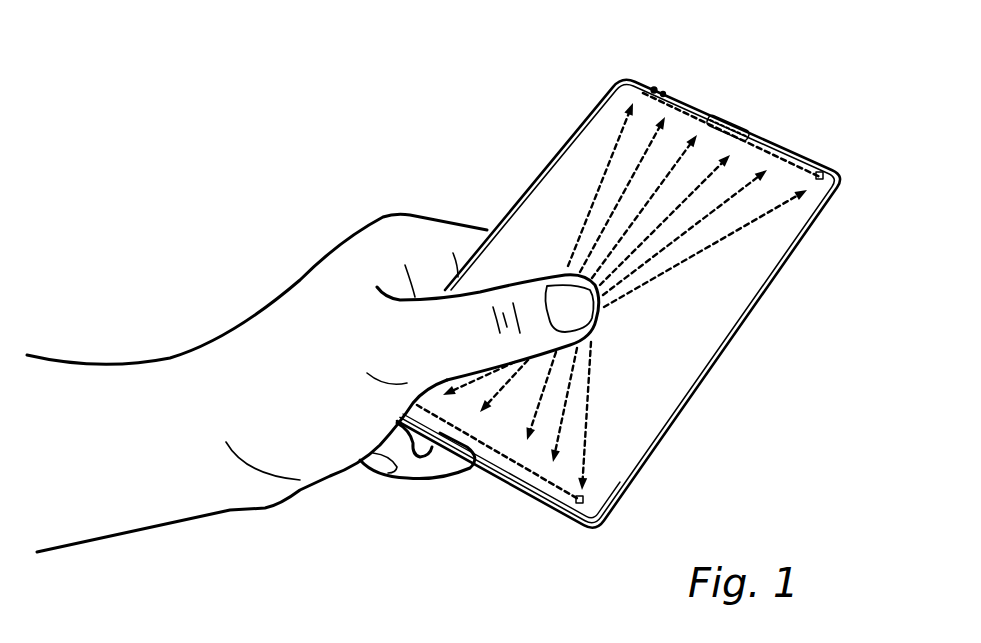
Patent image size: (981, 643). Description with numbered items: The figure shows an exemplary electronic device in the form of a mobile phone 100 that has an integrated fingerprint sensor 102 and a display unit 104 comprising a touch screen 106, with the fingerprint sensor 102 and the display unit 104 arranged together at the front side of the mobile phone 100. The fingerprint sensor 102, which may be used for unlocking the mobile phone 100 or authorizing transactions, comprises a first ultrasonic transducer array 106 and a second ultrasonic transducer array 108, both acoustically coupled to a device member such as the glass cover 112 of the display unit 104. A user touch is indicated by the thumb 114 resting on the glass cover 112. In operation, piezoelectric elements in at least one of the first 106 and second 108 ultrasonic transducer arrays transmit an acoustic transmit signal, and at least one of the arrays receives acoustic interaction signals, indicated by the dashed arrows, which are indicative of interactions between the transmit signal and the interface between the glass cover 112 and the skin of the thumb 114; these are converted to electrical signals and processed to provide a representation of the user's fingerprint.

The mobile phone 100 is at (812, 292).
The fingerprint sensor 102 is at (668, 458).
The display unit 104 is at (700, 332).
The first ultrasonic transducer array 106 is at (545, 487).
The second ultrasonic transducer array 108 is at (787, 153).
The glass cover 112 is at (537, 200).
The thumb 114 is at (555, 295).